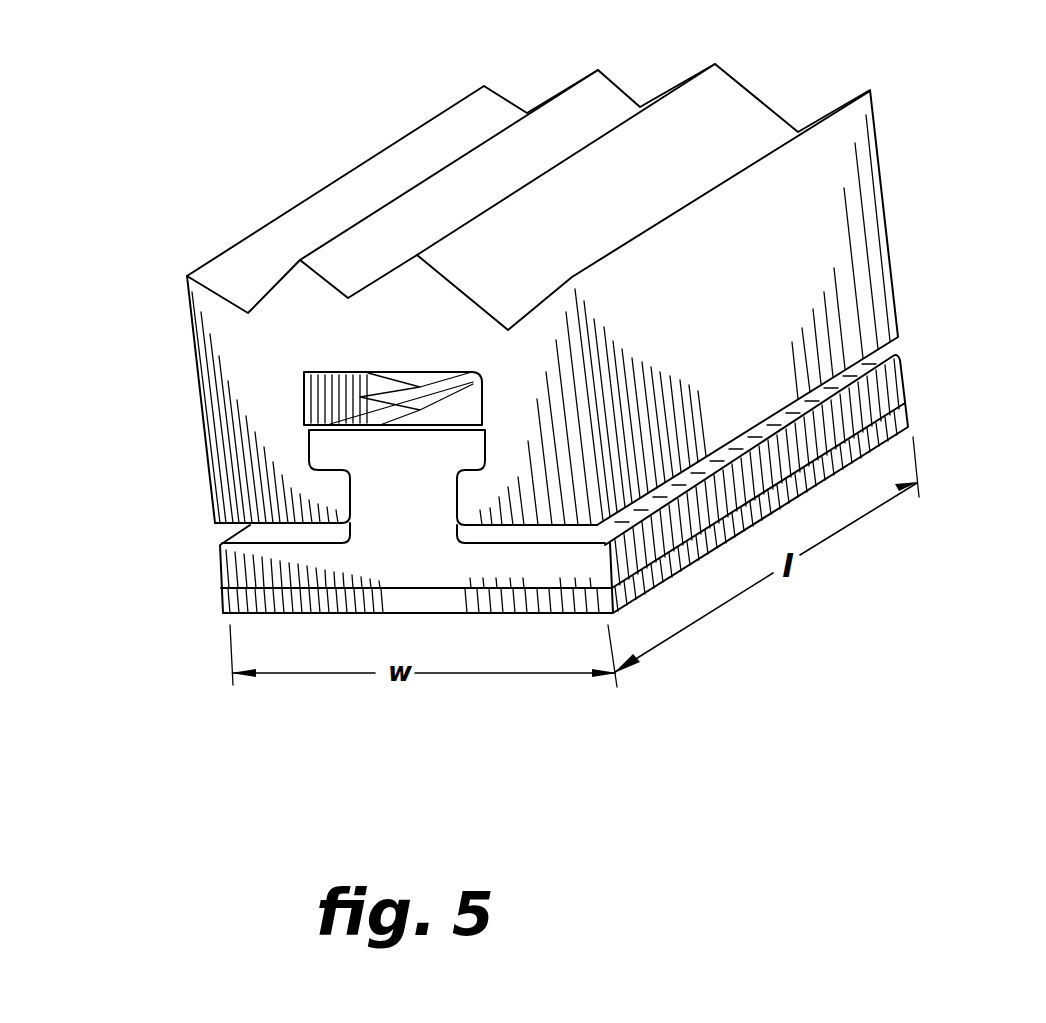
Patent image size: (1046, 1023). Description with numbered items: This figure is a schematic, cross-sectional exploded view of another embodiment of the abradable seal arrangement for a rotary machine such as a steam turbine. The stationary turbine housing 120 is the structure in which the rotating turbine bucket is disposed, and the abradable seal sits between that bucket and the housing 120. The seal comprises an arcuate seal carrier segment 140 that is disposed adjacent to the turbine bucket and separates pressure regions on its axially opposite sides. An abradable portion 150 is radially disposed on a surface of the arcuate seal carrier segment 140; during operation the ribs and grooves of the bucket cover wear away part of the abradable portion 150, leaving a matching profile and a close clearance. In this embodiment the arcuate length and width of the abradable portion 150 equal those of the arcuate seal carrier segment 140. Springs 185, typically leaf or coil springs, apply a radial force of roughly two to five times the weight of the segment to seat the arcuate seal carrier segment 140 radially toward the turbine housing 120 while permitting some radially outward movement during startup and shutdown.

The turbine housing 120 is at (188, 317).
The arcuate seal carrier segment 140 is at (421, 488).
The springs 185 is at (365, 397).
The abradable portion 150 is at (225, 600).